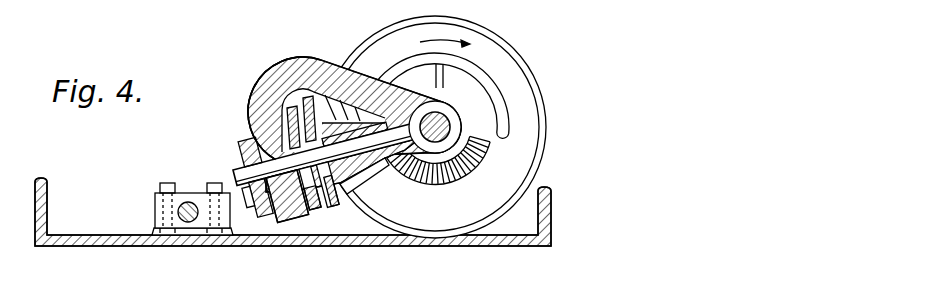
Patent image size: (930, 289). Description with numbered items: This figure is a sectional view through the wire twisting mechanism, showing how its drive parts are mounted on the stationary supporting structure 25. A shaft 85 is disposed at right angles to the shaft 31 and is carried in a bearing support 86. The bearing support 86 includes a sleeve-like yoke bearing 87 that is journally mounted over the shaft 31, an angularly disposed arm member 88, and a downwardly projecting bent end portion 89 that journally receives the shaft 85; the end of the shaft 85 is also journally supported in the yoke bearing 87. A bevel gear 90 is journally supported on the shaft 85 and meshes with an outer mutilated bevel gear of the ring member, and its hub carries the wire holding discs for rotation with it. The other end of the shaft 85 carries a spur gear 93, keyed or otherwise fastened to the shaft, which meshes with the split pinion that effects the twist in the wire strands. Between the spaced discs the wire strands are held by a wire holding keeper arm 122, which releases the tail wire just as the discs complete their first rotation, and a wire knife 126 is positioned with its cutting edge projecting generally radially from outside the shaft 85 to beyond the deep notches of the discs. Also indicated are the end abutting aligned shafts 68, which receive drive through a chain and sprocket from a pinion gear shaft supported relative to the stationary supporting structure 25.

The stationary supporting structure 25 is at (553, 210).
The shaft 31 is at (463, 127).
The end abutting aligned shafts 68 is at (193, 226).
The shaft 85 is at (347, 187).
The bearing support 86 is at (290, 225).
The yoke bearing 87 is at (460, 110).
The arm member 88 is at (357, 72).
The bent end portion 89 is at (263, 126).
The bevel gear 90 is at (372, 184).
The spur gear 93 is at (243, 151).
The keeper arm 122 is at (336, 228).
The wire knife 126 is at (315, 228).